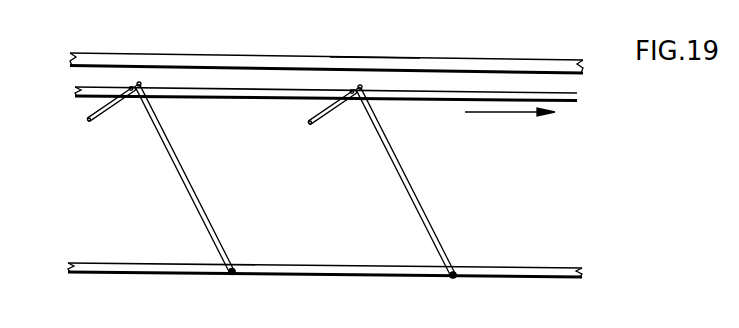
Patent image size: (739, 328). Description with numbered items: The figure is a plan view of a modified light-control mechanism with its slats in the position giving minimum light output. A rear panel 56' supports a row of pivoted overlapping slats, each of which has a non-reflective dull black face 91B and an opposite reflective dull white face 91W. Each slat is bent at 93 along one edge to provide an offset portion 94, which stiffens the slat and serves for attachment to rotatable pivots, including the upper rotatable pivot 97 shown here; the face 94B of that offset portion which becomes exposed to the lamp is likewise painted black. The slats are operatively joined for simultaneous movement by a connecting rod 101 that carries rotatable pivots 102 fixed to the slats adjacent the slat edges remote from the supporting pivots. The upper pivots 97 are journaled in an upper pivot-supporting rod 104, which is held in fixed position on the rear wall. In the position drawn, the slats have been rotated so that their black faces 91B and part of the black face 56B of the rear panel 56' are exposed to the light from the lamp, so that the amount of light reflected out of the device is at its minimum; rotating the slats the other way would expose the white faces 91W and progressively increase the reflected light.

The rear panel 56' is at (326, 50).
The black face of rear panel 56B is at (372, 66).
The non-reflective dull black face 91B is at (195, 190).
The reflective dull white face 91W is at (252, 229).
The bend 93 is at (142, 84).
The offset portion 94 is at (88, 122).
The black face of offset portion 94B is at (112, 104).
The upper rotatable pivot 97 is at (130, 88).
The connecting rod 101 is at (330, 270).
The rotatable pivot 102 is at (232, 275).
The upper pivot-supporting rod 104 is at (568, 103).